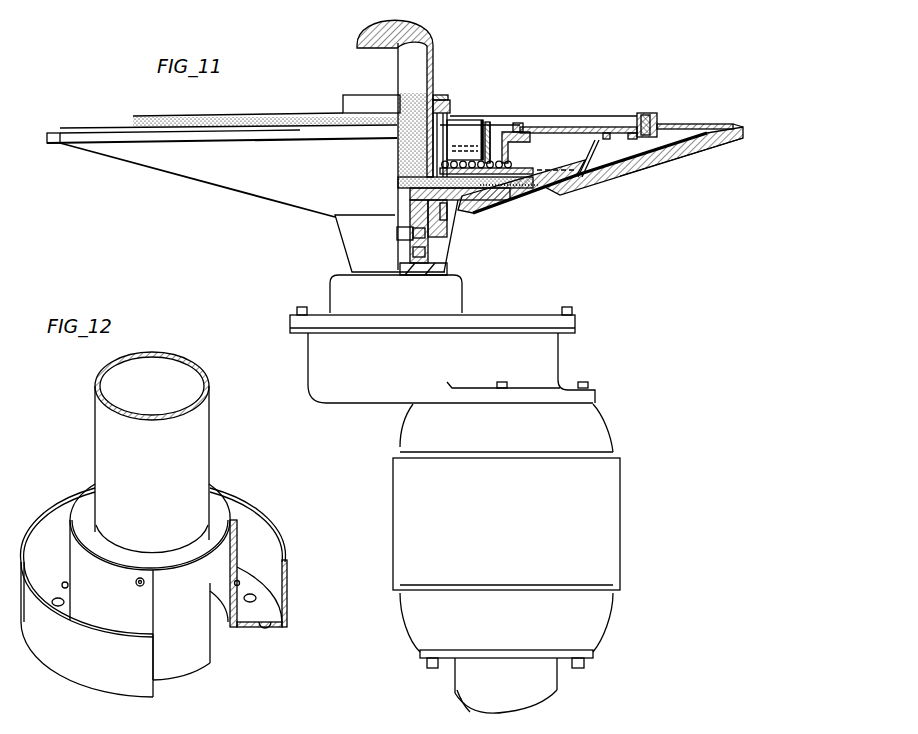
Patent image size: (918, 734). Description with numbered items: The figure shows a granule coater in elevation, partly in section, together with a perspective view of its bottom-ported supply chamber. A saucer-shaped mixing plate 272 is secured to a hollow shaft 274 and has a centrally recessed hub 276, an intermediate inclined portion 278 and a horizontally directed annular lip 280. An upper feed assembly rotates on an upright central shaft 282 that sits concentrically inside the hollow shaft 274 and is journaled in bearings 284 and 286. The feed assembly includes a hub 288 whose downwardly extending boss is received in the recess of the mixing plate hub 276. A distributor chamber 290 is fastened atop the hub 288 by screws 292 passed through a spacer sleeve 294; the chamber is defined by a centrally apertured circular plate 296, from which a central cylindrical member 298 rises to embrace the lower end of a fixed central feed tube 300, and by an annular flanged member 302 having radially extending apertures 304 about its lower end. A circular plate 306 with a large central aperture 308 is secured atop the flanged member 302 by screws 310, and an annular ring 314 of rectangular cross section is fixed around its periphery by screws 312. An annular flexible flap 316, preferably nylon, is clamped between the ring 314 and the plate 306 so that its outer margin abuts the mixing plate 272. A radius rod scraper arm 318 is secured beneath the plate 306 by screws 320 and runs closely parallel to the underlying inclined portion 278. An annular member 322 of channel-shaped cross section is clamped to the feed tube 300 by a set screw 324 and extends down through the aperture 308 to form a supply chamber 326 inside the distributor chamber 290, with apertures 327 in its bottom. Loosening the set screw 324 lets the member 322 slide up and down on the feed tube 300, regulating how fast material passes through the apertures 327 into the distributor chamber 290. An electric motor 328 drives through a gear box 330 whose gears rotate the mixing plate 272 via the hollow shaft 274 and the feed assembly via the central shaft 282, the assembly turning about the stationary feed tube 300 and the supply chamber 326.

In FIG. 11, the mixing plate 272 is at (243, 201).
In FIG. 11, the hollow shaft 274 is at (452, 277).
In FIG. 11, the centrally recessed hub 276 is at (356, 259).
In FIG. 11, the intermediate inclined portion 278 is at (584, 179).
In FIG. 11, the horizontally directed annular lip 280 is at (54, 145).
In FIG. 11, the upright central shaft 282 is at (398, 232).
In FIG. 11, the bearing 284 is at (426, 234).
In FIG. 11, the bearing 286 is at (447, 250).
In FIG. 11, the hub 288 is at (410, 197).
In FIG. 11, the distributor chamber 290 is at (493, 140).
In FIG. 11, the screws 292 is at (458, 196).
In FIG. 11, the spacer sleeve 294 is at (503, 197).
In FIG. 11, the centrally apertured circular plate 296 is at (550, 184).
In FIG. 11, the central cylindrical member 298 is at (443, 147).
In FIG. 11, the central feed tube 300 is at (365, 65).
In FIG. 12, the central feed tube 300 is at (200, 443).
In FIG. 11, the annular flanged member 302 is at (500, 131).
In FIG. 11, the radially extending apertures 304 is at (505, 163).
In FIG. 11, the circular plate 306 is at (605, 128).
In FIG. 11, the central aperture 308 is at (489, 128).
In FIG. 11, the screws 310 is at (522, 124).
In FIG. 11, the screws 312 is at (656, 113).
In FIG. 11, the annular ring 314 is at (640, 119).
In FIG. 11, the annular flexible flap 316 is at (720, 123).
In FIG. 11, the radius rod scraper arm 318 is at (649, 153).
In FIG. 11, the screws 320 is at (620, 164).
In FIG. 11, the annular member of channel-shaped cross section 322 is at (440, 142).
In FIG. 12, the annular member of channel-shaped cross section 322 is at (257, 533).
In FIG. 11, the set screw 324 is at (460, 84).
In FIG. 12, the set screw 324 is at (135, 586).
In FIG. 11, the supply chamber 326 is at (480, 140).
In FIG. 12, the supply chamber 326 is at (269, 564).
In FIG. 12, the apertures 327 is at (268, 621).
In FIG. 11, the electric motor 328 is at (587, 427).
In FIG. 11, the gear box 330 is at (553, 350).